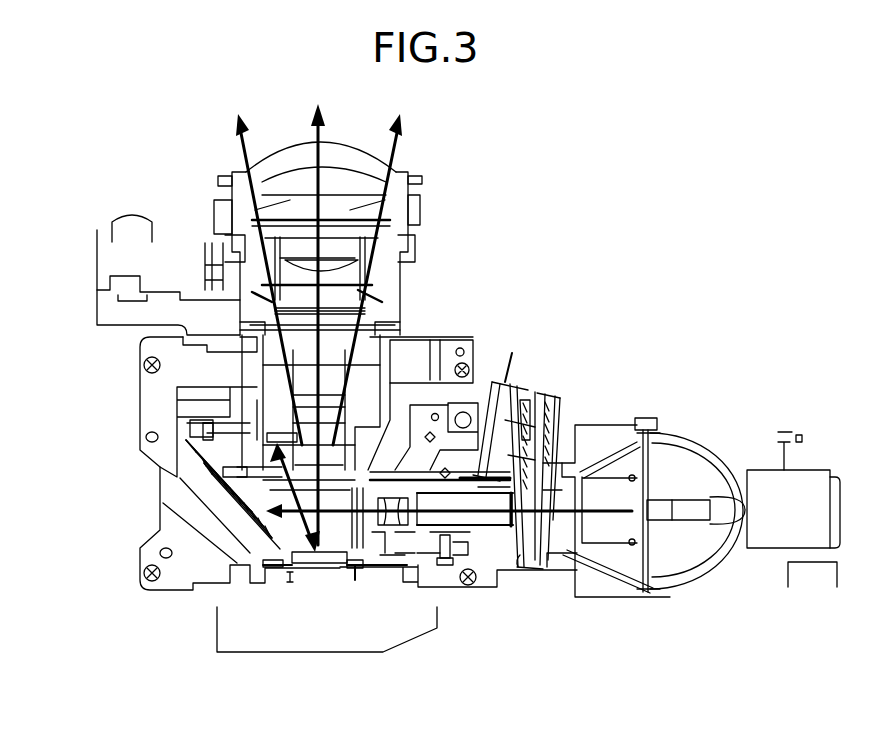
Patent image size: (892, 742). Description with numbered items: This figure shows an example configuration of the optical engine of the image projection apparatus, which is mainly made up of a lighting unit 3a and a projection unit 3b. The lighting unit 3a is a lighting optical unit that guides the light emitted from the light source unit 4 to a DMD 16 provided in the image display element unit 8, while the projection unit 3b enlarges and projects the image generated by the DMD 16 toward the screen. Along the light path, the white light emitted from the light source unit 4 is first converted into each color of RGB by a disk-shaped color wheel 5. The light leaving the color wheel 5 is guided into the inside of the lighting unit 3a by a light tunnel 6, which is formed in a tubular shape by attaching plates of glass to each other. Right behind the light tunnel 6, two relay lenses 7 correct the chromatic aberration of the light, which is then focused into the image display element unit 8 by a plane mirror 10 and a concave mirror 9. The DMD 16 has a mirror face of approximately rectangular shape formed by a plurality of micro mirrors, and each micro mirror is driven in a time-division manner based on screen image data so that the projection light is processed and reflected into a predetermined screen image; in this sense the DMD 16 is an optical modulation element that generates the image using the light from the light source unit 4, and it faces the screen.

The lighting unit 3a is at (68, 318).
The projection unit 3b is at (424, 245).
The light source unit 4 is at (733, 577).
The color wheel 5 is at (570, 410).
The light tunnel 6 is at (497, 545).
The relay lenses 7 is at (411, 548).
The image display element unit 8 is at (335, 635).
The concave mirror 9 is at (226, 456).
The plane mirror 10 is at (248, 522).
The DMD 16 is at (318, 580).